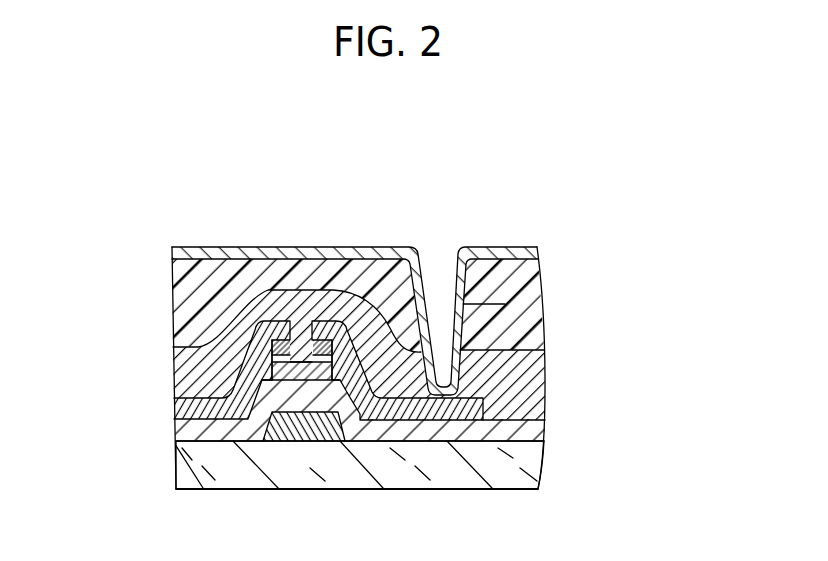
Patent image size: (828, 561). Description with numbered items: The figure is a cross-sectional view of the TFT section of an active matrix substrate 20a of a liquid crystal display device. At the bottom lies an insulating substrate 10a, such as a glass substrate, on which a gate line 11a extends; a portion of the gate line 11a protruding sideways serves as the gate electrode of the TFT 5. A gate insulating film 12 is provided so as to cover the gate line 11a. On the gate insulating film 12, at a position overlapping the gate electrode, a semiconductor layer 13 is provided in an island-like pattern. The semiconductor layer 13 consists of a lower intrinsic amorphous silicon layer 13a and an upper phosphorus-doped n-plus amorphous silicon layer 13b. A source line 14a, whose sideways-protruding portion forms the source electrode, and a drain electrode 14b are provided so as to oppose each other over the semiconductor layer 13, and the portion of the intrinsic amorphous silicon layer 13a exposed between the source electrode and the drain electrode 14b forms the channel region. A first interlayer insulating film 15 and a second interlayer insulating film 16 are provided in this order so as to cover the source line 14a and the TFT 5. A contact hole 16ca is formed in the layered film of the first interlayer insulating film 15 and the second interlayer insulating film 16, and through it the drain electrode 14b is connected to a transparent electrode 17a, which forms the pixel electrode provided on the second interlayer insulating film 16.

The active matrix substrate 20a is at (179, 183).
The TFT 5 is at (339, 457).
The insulating substrate 10a is at (528, 478).
The gate line 11a is at (300, 433).
The gate insulating film 12 is at (540, 440).
The semiconductor layer 13 is at (270, 256).
The intrinsic amorphous silicon layer 13a is at (272, 362).
The phosphorus-doped n+ amorphous silicon layer 13b is at (272, 340).
The source line 14a is at (182, 410).
The drain electrode 14b is at (478, 412).
The first interlayer insulating film 15 is at (540, 377).
The second interlayer insulating film 16 is at (540, 323).
The contact hole 16ca is at (505, 304).
The transparent electrode 17a is at (536, 257).